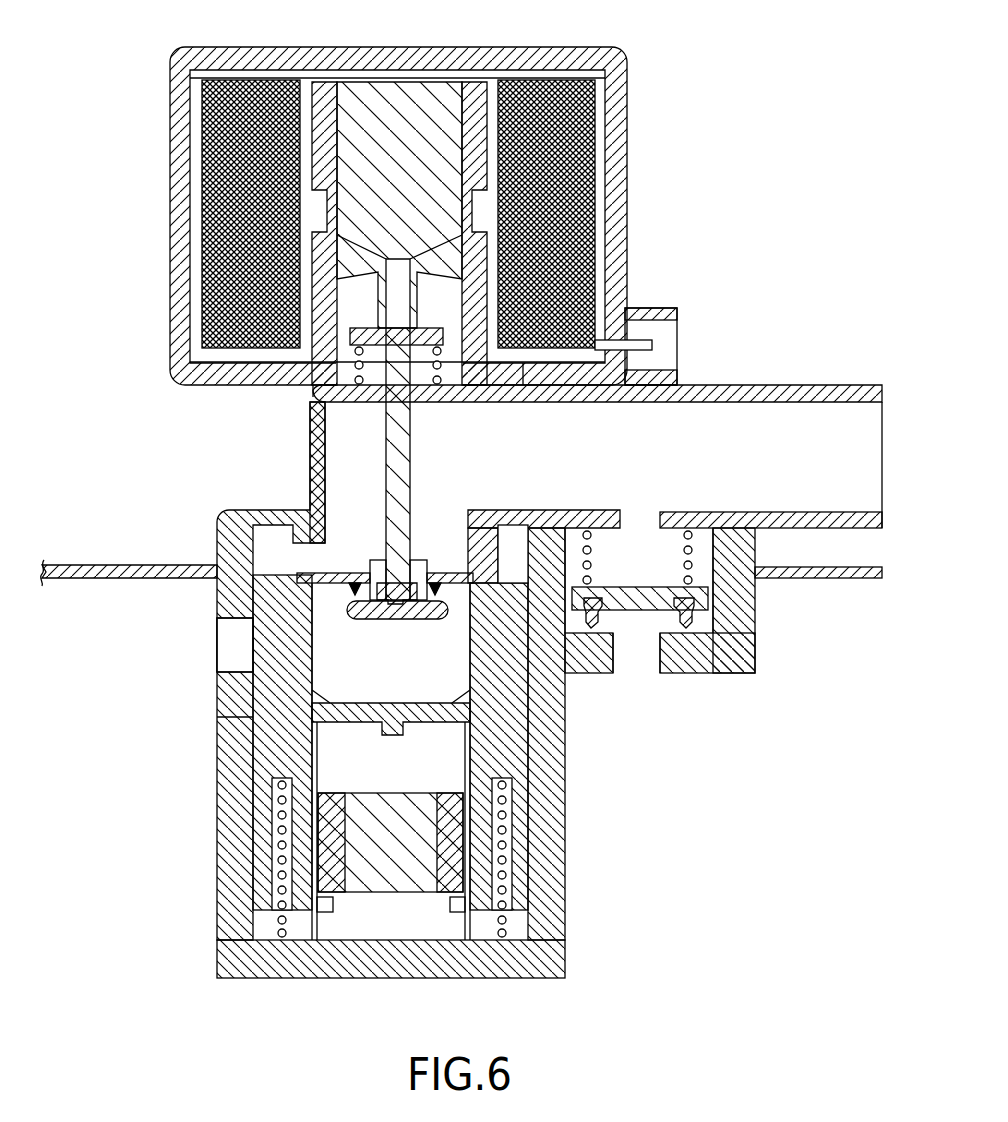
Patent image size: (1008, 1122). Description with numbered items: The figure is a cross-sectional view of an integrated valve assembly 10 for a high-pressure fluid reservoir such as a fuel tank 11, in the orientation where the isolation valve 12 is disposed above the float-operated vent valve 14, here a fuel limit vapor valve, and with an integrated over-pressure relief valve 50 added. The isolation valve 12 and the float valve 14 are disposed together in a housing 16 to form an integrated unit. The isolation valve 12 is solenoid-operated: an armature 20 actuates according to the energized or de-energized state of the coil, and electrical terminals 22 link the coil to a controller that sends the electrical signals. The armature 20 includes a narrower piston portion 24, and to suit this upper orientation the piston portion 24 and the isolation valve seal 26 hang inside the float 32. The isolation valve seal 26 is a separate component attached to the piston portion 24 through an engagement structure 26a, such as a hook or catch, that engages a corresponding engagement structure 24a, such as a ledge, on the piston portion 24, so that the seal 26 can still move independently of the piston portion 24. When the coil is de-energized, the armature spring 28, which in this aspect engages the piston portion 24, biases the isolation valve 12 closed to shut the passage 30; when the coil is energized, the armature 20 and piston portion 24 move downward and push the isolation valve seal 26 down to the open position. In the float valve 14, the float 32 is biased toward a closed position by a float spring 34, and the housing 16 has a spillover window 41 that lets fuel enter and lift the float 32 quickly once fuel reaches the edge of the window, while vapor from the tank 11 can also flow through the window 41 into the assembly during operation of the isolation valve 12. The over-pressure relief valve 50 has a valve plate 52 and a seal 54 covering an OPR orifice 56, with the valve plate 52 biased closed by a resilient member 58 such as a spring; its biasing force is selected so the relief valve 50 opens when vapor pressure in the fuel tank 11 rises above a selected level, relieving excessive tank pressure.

The integrated valve assembly 10 is at (746, 746).
The fuel tank 11 is at (830, 580).
The isolation valve 12 is at (131, 362).
The float-operated vent valve 14 is at (184, 625).
The housing 16 is at (565, 780).
The armature 20 is at (432, 100).
The electrical terminals 22 is at (663, 352).
The piston portion 24 is at (386, 448).
The engagement structure 24a is at (378, 560).
The isolation valve seal 26 is at (410, 620).
The engagement structure 26a is at (418, 560).
The armature spring 28 is at (446, 393).
The passage 30 is at (427, 576).
The float 32 is at (500, 738).
The float spring 34 is at (500, 890).
The spillover window 41 is at (220, 648).
The over-pressure relief valve 50 is at (766, 590).
The valve plate 52 is at (705, 588).
The seal 54 is at (690, 622).
The OPR orifice 56 is at (636, 652).
The resilient member 58 is at (682, 528).